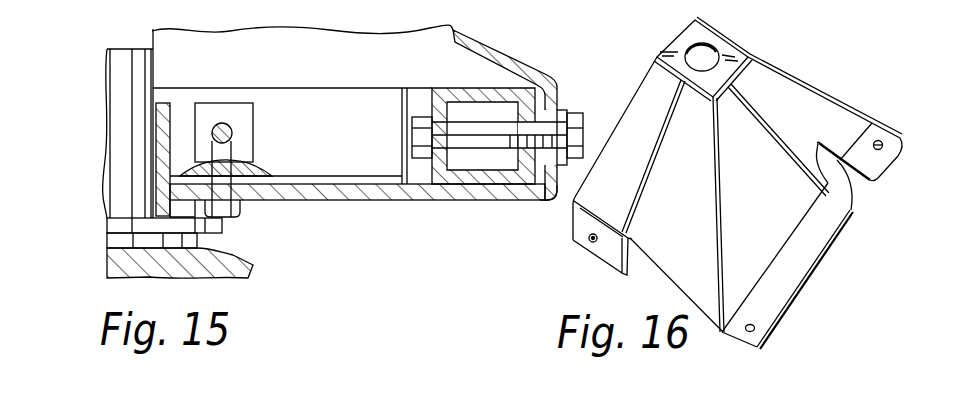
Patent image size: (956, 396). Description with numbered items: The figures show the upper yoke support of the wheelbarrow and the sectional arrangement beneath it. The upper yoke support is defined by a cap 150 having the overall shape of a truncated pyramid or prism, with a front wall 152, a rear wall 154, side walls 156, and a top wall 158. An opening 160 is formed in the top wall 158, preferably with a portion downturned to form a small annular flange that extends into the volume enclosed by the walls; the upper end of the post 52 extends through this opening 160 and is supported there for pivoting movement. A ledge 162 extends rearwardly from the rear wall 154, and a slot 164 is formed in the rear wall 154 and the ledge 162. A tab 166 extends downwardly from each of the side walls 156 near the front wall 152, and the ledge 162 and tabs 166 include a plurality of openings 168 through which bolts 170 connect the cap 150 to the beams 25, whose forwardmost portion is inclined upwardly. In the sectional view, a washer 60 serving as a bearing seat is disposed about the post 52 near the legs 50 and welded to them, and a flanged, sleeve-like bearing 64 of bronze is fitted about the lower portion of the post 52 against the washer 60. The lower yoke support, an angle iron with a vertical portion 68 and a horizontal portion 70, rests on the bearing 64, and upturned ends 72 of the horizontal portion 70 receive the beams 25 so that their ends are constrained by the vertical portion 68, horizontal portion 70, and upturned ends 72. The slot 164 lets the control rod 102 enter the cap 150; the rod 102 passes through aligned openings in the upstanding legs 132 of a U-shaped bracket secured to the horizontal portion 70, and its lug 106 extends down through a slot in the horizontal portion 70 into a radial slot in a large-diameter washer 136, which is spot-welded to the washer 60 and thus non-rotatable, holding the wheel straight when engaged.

In FIG. 15, the beams 25 is at (467, 97).
In FIG. 15, the legs 50 is at (243, 277).
In FIG. 15, the post 52 is at (120, 166).
In FIG. 15, the washer 60 is at (115, 238).
In FIG. 15, the flanged bearing 64 is at (165, 125).
In FIG. 15, the vertical portion 68 is at (303, 100).
In FIG. 15, the horizontal portion 70 is at (358, 200).
In FIG. 15, the upturned ends 72 is at (510, 97).
In FIG. 15, the control rod 102 is at (221, 123).
In FIG. 15, the lug 106 is at (218, 236).
In FIG. 15, the upstanding legs 132 is at (245, 132).
In FIG. 15, the large-diameter washer 136 is at (118, 227).
In FIG. 16, the cap 150 is at (795, 68).
In FIG. 15, the front wall 152 is at (287, 63).
In FIG. 16, the rear wall 154 is at (785, 100).
In FIG. 15, the side walls 156 is at (493, 43).
In FIG. 16, the side walls 156 is at (637, 115).
In FIG. 16, the top wall 158 is at (725, 57).
In FIG. 16, the opening 160 is at (682, 51).
In FIG. 16, the ledge 162 is at (787, 273).
In FIG. 16, the slot 164 is at (843, 195).
In FIG. 15, the tab 166 is at (551, 186).
In FIG. 16, the tab 166 is at (580, 238).
In FIG. 16, the openings 168 is at (878, 140).
In FIG. 15, the bolt 170 is at (413, 134).